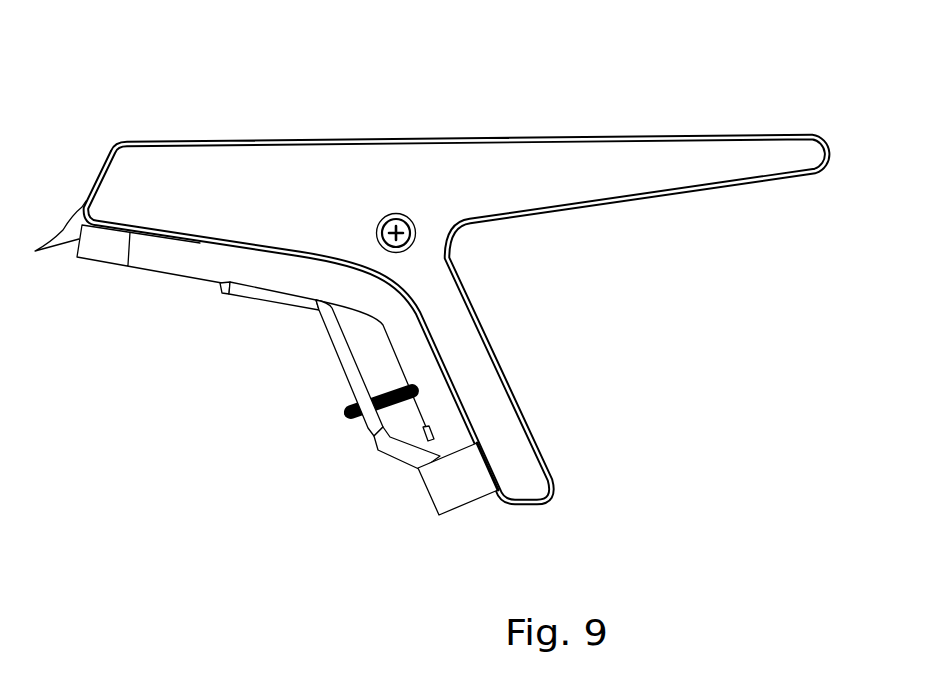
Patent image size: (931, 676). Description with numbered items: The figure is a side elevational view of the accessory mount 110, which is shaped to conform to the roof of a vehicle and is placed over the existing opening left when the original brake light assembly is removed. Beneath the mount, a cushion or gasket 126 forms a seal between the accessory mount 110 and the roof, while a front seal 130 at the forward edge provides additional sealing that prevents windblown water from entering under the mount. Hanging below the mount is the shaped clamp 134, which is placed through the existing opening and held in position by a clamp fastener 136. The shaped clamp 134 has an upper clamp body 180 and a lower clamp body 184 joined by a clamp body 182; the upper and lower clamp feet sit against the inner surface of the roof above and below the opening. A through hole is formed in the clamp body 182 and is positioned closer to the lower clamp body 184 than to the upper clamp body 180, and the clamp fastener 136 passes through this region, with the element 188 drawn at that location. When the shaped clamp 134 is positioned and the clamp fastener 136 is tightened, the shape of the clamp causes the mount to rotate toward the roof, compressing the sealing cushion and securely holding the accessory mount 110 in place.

The accessory mount 110 is at (543, 112).
The cushion or gasket 126 is at (190, 272).
The front seal 130 is at (62, 236).
The shaped clamp 134 is at (323, 385).
The clamp fastener 136 is at (348, 422).
The upper clamp body 180 is at (263, 303).
The clamp body 182 is at (329, 346).
The lower clamp body 184 is at (406, 465).
The pin 188 is at (370, 397).